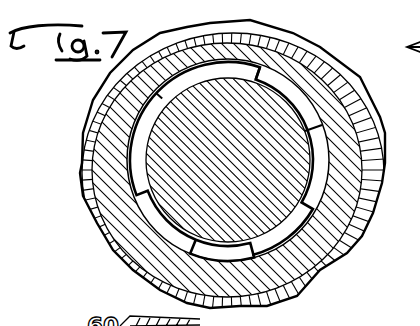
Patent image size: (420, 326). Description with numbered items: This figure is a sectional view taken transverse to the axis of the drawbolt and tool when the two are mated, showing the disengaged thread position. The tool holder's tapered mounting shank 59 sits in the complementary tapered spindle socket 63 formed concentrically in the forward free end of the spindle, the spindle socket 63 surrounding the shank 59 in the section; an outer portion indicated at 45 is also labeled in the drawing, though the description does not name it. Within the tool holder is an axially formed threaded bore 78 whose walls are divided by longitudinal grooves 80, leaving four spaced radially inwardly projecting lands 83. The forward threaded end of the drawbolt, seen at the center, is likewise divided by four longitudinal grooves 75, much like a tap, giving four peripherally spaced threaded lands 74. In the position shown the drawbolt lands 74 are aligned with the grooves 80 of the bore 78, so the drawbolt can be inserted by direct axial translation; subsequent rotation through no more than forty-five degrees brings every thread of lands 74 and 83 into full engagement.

The housing 45 is at (84, 161).
The tapered spindle socket 63 is at (100, 133).
The tapered mounting shank 59 is at (103, 183).
The threaded lands 74 is at (160, 97).
The longitudinal grooves 75 is at (150, 196).
The threaded bore 78 is at (320, 127).
The longitudinal grooves 80 is at (268, 80).
The inwardly projecting lands 83 is at (222, 72).